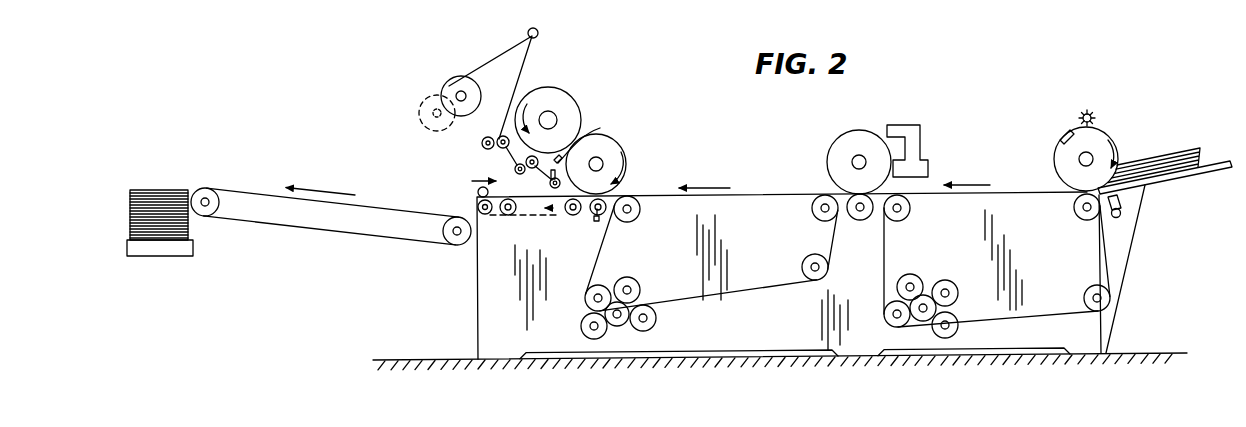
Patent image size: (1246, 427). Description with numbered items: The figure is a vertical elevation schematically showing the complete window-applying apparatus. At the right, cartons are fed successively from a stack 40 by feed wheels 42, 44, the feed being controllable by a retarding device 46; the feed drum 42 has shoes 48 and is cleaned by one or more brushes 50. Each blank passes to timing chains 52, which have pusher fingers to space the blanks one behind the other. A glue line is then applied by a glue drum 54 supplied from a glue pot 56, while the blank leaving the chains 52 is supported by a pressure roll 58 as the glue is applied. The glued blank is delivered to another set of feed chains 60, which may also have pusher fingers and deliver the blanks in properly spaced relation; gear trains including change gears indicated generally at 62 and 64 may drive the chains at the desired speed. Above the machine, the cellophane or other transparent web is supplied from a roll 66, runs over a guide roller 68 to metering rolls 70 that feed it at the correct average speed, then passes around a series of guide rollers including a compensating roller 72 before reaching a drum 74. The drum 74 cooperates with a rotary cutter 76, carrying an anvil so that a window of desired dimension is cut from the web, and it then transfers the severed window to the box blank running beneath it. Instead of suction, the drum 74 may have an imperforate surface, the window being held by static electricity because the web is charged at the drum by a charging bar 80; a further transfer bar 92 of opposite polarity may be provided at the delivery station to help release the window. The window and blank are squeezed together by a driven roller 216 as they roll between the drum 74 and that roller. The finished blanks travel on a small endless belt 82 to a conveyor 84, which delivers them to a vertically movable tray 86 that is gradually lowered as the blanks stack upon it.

The stack 40 is at (1160, 172).
The feed drum 42 is at (1055, 158).
The feed wheel 44 is at (1081, 220).
The retarding device 46 is at (1122, 212).
The shoes 48 is at (1064, 133).
The brushes 50 is at (1096, 119).
The timing chains 52 is at (1015, 195).
The glue drum 54 is at (846, 134).
The glue pot 56 is at (922, 147).
The pressure roll 58 is at (862, 220).
The feed chains 60 is at (758, 198).
The change gears 62 is at (934, 278).
The change gears 64 is at (648, 287).
The roll 66 is at (470, 82).
The guide roller 68 is at (539, 34).
The metering rolls 70 is at (483, 144).
The compensating roller 72 is at (531, 169).
The drum 74 is at (612, 141).
The rotary cutter 76 is at (568, 100).
The charging bar 80 is at (592, 137).
The endless belt 82 is at (516, 212).
The conveyor 84 is at (367, 212).
The tray 86 is at (178, 251).
The transfer bar 92 is at (596, 222).
The roller 216 is at (571, 216).